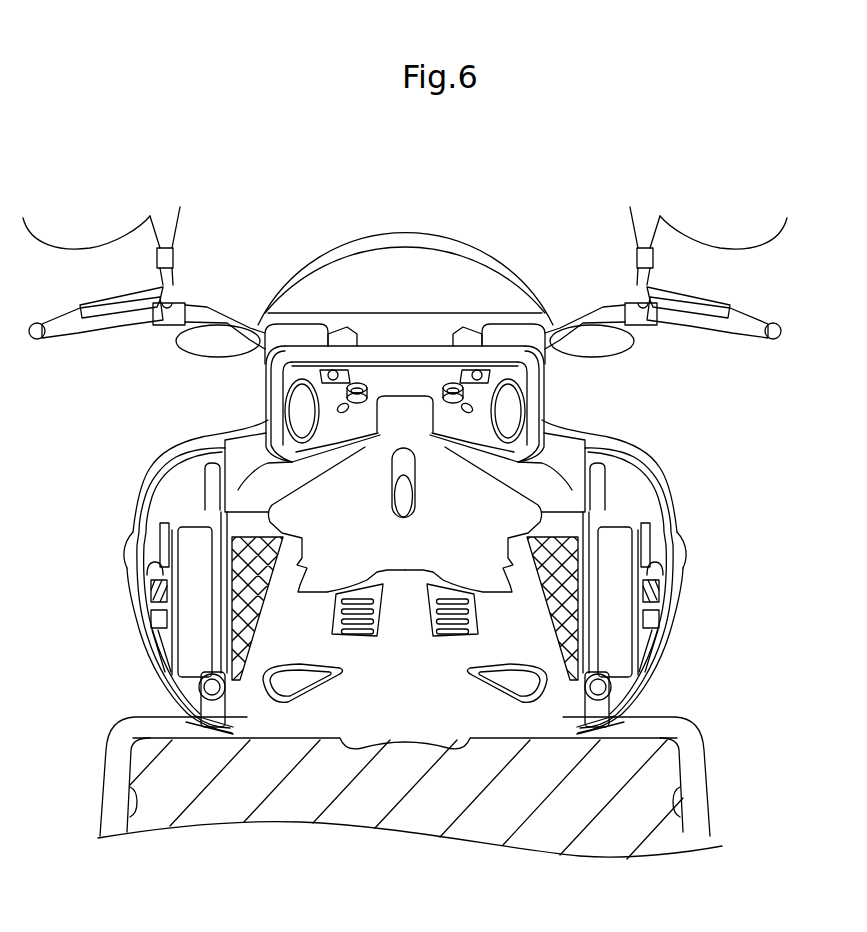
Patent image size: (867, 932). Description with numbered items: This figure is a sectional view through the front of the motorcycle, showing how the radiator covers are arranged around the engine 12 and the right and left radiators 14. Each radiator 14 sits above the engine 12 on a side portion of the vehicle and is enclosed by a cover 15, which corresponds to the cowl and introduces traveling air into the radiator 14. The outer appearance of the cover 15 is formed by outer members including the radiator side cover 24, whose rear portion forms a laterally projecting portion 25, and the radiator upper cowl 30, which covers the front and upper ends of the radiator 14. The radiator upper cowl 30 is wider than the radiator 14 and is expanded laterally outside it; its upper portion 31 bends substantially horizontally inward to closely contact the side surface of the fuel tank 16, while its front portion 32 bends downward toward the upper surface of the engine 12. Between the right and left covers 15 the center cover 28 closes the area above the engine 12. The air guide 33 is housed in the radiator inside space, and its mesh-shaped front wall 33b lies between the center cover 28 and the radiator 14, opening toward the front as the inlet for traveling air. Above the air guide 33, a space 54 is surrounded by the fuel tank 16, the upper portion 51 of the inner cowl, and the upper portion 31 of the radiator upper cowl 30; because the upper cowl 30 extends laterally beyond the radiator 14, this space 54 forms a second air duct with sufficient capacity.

The engine 12 is at (306, 822).
The radiator 14 is at (187, 582).
The cover 15 is at (197, 405).
The fuel tank 16 is at (570, 400).
The radiator side cover 24 is at (647, 587).
The projecting portion 25 is at (125, 542).
The center cover 28 is at (412, 667).
The radiator upper cowl 30 is at (122, 478).
The upper portion 31 is at (235, 492).
The front portion 32 is at (160, 690).
The air guide 33 is at (199, 589).
The front wall 33b is at (242, 623).
The upper portion of the inner cowl 51 is at (247, 418).
The space 54 is at (168, 442).